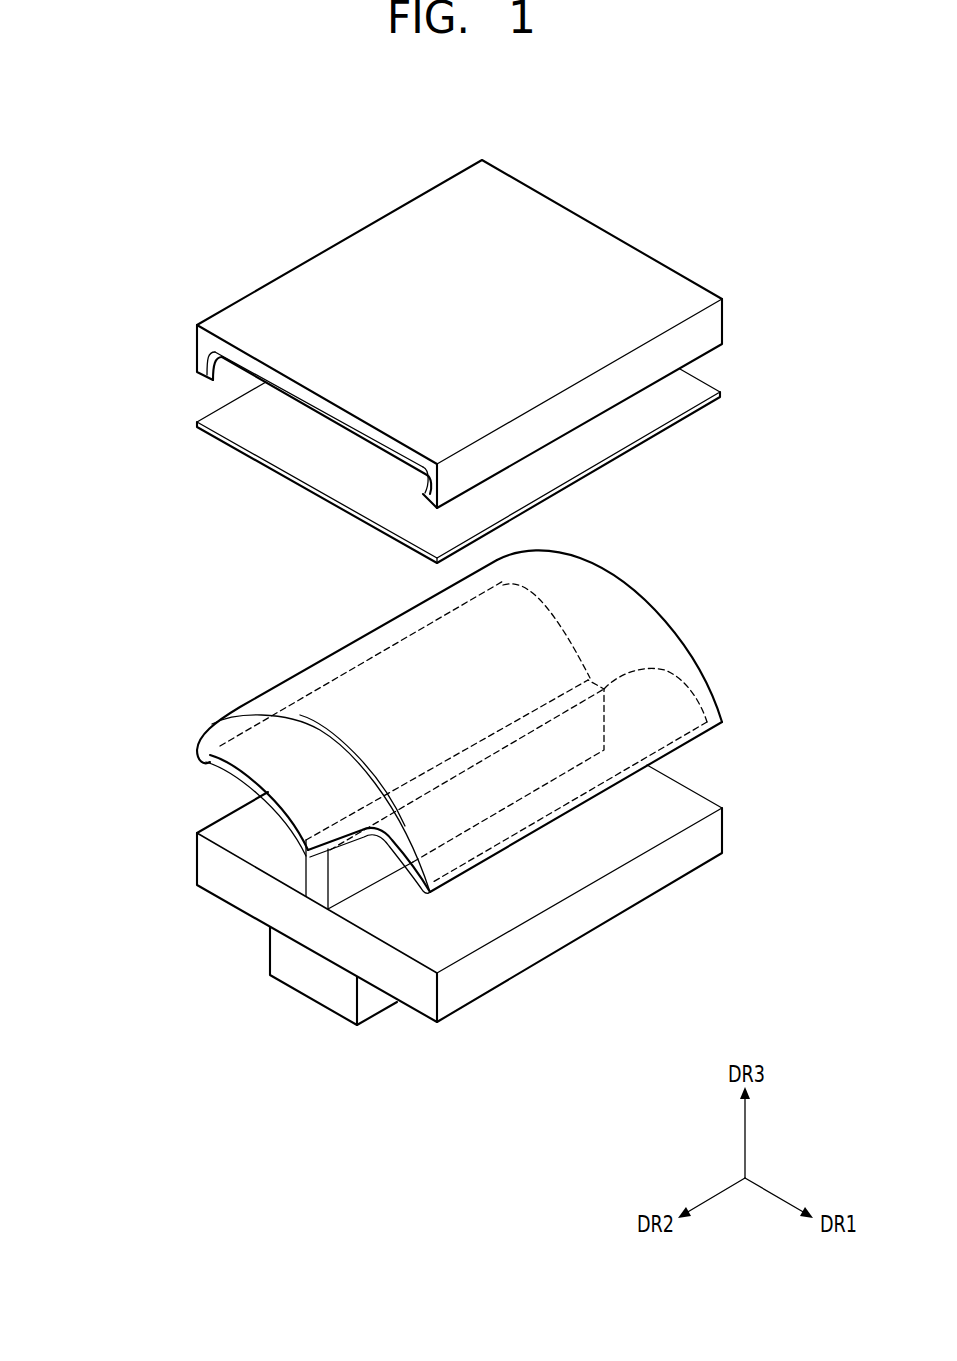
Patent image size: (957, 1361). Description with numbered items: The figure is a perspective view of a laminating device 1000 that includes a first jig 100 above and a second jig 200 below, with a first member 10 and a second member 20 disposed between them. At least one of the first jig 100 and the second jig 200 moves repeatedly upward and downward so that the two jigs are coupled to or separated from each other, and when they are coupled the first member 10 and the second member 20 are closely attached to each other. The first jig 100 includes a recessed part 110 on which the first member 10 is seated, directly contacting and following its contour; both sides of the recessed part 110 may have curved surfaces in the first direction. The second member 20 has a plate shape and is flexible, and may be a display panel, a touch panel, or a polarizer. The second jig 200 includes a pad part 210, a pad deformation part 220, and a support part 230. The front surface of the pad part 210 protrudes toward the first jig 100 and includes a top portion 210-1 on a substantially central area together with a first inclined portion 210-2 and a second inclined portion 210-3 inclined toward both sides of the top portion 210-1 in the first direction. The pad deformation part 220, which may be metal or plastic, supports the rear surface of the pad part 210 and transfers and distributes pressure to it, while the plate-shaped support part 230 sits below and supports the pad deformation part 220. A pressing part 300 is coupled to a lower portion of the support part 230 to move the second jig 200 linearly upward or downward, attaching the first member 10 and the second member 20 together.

The laminating device 1000 is at (640, 160).
The first jig 100 is at (713, 325).
The recessed part 110 is at (242, 362).
The second member 20 is at (722, 397).
The first member 10 is at (424, 492).
The second jig 200 is at (93, 663).
The pad part 210 is at (295, 692).
The top portion 210-1 is at (357, 763).
The first inclined portion 210-2 is at (311, 671).
The second inclined portion 210-3 is at (427, 844).
The pad deformation part 220 is at (200, 754).
The support part 230 is at (213, 866).
The pressing part 300 is at (278, 955).